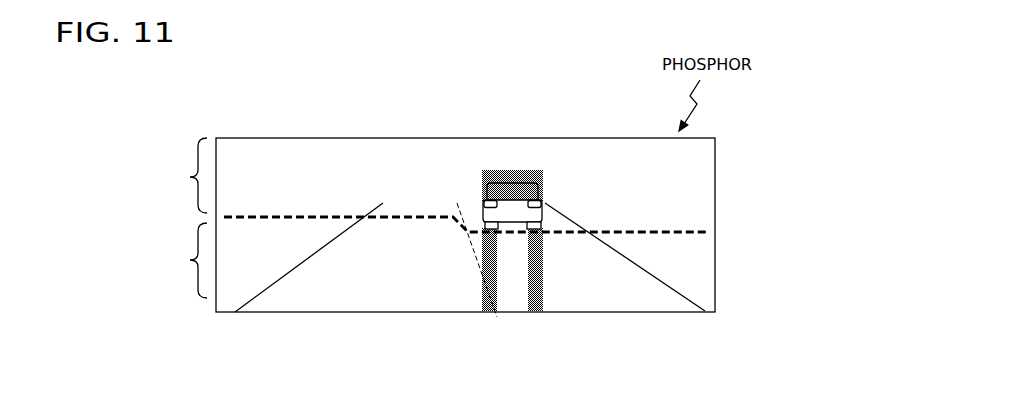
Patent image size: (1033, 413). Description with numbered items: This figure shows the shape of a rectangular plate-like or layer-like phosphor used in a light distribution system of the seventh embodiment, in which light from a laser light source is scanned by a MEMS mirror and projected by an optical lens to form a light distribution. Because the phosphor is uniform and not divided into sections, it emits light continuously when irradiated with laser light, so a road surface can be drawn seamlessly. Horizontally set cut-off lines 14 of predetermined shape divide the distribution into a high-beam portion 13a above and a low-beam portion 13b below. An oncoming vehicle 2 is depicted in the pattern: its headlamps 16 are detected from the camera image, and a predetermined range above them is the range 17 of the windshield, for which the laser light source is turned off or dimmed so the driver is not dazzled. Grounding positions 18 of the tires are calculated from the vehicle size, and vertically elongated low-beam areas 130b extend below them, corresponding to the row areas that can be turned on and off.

The oncoming vehicle 2 is at (513, 213).
The LEDs above the cut-off lines 13a is at (116, 175).
The LEDs below the cut-off lines 13b is at (120, 260).
The cut-off lines 14 is at (703, 232).
The headlamps of the oncoming vehicle 16 is at (485, 201).
The range of a windshield 17 is at (502, 172).
The grounding positions of tires 18 is at (483, 233).
The area 130b is at (487, 312).